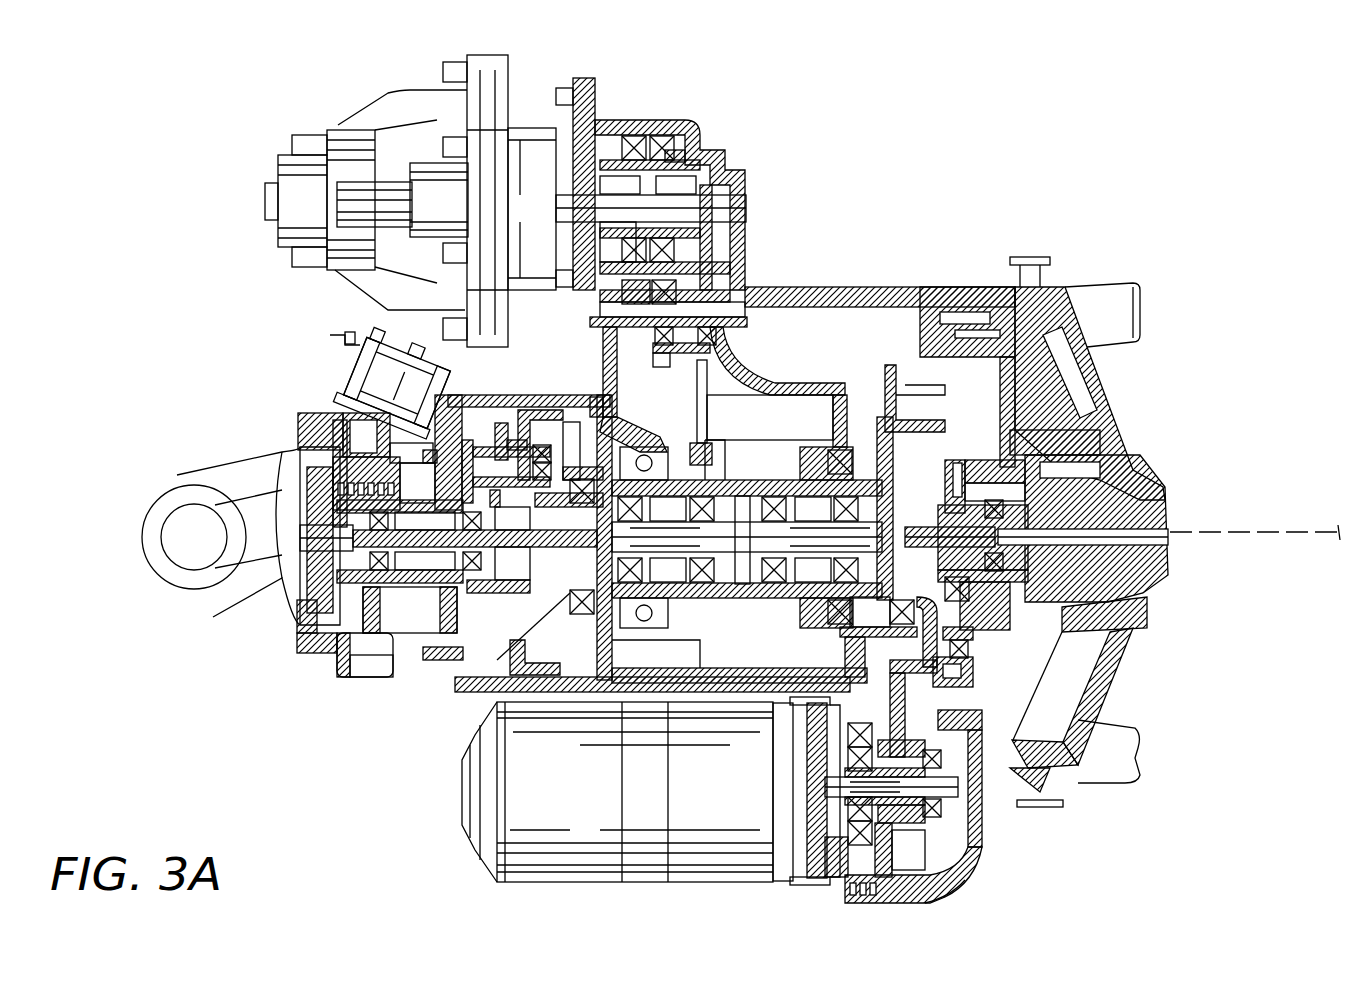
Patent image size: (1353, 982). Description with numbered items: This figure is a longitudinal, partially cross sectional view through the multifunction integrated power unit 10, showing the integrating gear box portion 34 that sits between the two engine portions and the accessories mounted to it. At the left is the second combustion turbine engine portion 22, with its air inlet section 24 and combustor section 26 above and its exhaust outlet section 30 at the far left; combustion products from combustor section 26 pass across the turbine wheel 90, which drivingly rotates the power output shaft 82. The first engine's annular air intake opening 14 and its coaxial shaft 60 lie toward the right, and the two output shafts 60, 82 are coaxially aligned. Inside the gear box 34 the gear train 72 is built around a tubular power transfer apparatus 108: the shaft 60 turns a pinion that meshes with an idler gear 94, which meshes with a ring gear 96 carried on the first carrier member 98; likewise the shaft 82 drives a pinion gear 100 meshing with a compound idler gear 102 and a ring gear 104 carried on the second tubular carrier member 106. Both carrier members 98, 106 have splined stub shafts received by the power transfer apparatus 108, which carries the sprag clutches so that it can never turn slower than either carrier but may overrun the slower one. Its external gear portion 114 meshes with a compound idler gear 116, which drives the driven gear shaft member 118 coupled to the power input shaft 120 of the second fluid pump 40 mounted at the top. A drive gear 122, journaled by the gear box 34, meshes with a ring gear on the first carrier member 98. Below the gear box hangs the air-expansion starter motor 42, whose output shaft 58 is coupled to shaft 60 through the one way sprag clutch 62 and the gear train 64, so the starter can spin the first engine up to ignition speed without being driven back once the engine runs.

The multifunction integrated power unit 10 is at (1050, 165).
The annular air intake opening 14 is at (1128, 395).
The second combustion turbine engine portion 22 is at (330, 400).
The air inlet section 24 is at (335, 345).
The combustor section 26 is at (356, 366).
The exhaust outlet section 30 is at (172, 502).
The integrating gear box portion 34 is at (742, 178).
The second fluid pump 40 is at (525, 68).
The starter motor 42 is at (527, 782).
The output shaft 58 is at (835, 802).
The shaft 60 is at (1130, 618).
The one way sprag clutch 62 is at (985, 862).
The gear train 64 is at (938, 709).
The gear train 72 is at (738, 392).
The power output shaft 82 is at (433, 632).
The turbine wheel 90 is at (242, 592).
The idler gear 94 is at (940, 572).
The ring gear 96 is at (962, 672).
The first carrier member 98 is at (945, 420).
The pinion gear 100 is at (520, 556).
The compound idler gear 102 is at (500, 393).
The ring gear 104 is at (548, 410).
The second tubular carrier member 106 is at (588, 546).
The power transfer apparatus 108 is at (758, 610).
The gear portion 114 is at (705, 462).
The compound idler gear 116 is at (736, 258).
The driven gear shaft member 118 is at (690, 148).
The power input shaft 120 is at (560, 208).
The drive gear 122 is at (945, 880).